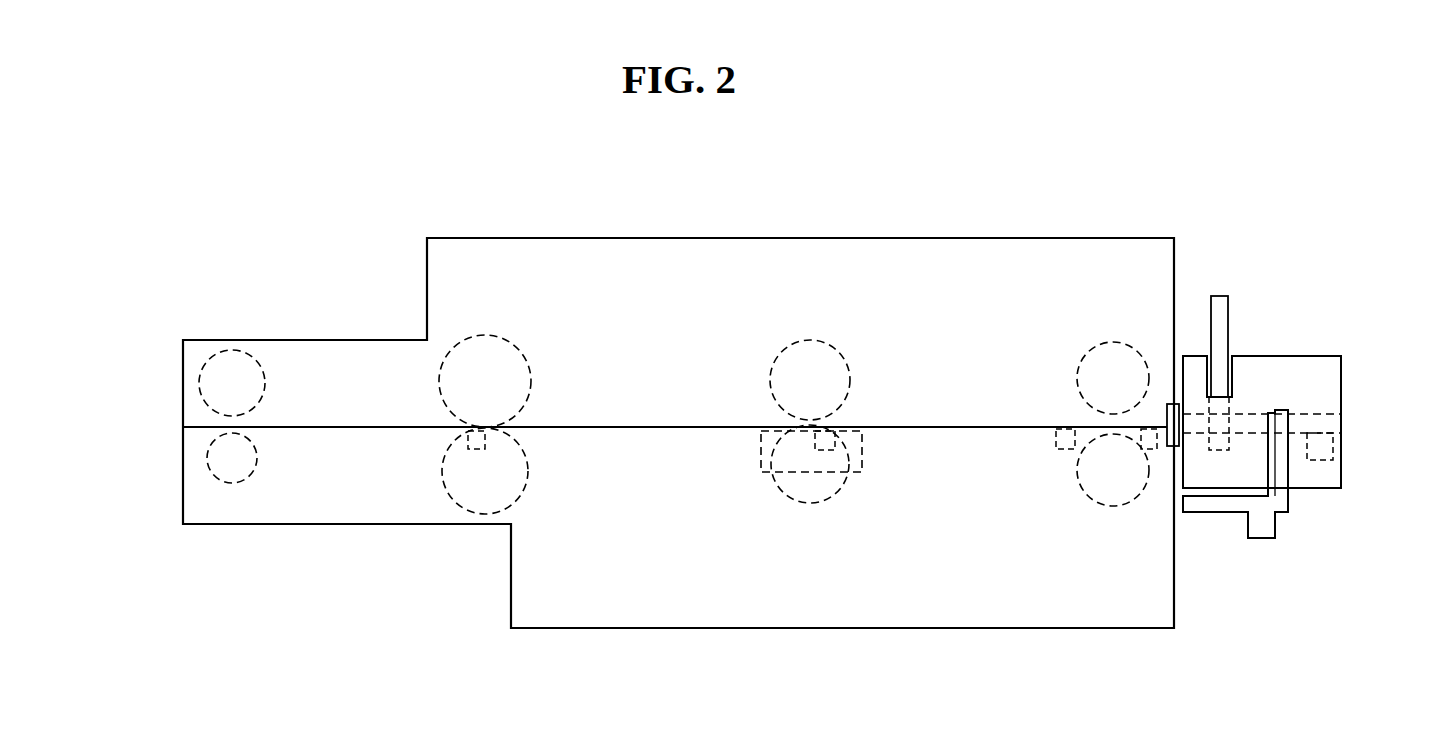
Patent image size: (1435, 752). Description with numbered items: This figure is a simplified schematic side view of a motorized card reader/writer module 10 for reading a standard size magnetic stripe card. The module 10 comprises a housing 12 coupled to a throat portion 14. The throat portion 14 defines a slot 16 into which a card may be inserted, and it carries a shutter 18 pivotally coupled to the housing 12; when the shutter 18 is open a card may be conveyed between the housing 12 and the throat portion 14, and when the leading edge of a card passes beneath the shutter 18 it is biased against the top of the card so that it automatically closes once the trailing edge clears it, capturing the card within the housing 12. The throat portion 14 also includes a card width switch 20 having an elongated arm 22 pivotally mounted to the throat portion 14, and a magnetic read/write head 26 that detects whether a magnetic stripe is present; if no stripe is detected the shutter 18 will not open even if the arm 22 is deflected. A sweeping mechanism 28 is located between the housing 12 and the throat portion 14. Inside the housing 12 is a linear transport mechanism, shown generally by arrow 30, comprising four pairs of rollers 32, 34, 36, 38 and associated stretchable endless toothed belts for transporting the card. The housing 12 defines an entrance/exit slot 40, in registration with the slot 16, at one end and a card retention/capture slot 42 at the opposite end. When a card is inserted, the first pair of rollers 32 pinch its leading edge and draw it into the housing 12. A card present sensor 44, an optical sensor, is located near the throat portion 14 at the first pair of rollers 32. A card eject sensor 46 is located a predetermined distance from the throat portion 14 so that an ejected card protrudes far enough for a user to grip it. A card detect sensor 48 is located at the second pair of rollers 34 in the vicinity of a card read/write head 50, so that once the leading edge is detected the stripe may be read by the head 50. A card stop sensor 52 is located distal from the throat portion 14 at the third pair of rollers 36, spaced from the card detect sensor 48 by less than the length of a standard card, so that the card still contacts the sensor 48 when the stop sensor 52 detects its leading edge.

The motorized card reader/writer module 10 is at (313, 183).
The housing 12 is at (896, 237).
The throat portion 14 is at (1310, 356).
The slot 16 is at (1342, 420).
The shutter 18 is at (1228, 298).
The card width switch 20 is at (1242, 635).
The elongated arm 22 is at (1287, 472).
The read/write head 26 is at (1335, 457).
The sweeping mechanism 28 is at (1180, 447).
The linear transport mechanism 30 is at (597, 276).
The first pair of rollers 32 is at (1087, 352).
The second pair of rollers 34 is at (782, 348).
The third pair of rollers 36 is at (530, 370).
The fourth pair of rollers 38 is at (264, 380).
The entrance/exit slot 40 is at (1170, 403).
The card retention/capture slot 42 is at (181, 427).
The card present sensor 44 is at (1150, 449).
The card eject sensor 46 is at (1062, 449).
The card detect sensor 48 is at (862, 462).
The card read/write head 50 is at (760, 463).
The card stop sensor 52 is at (470, 447).